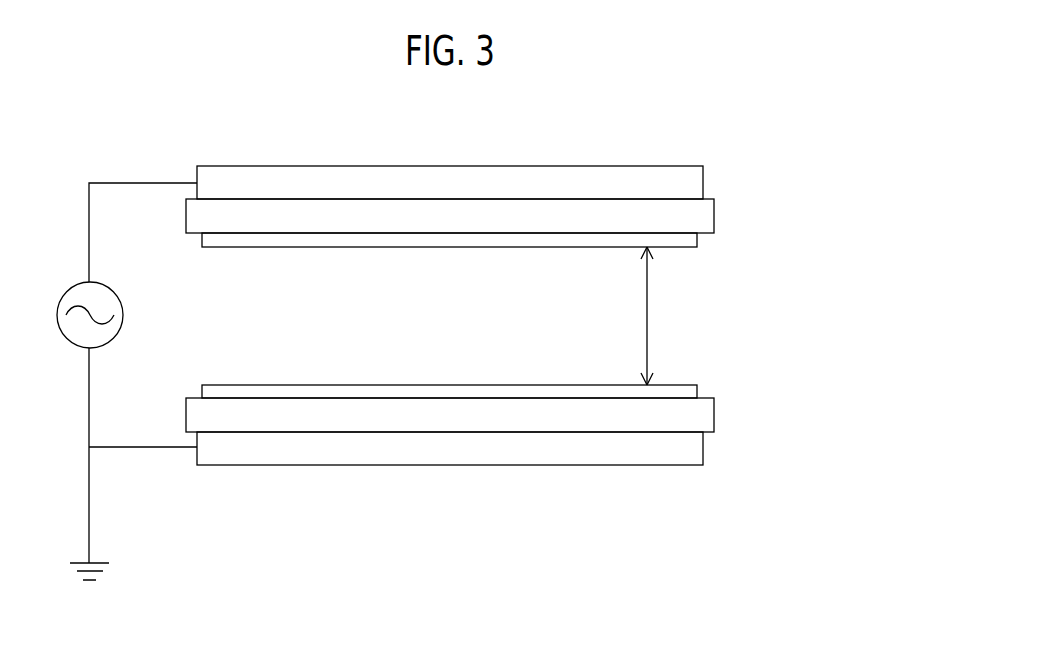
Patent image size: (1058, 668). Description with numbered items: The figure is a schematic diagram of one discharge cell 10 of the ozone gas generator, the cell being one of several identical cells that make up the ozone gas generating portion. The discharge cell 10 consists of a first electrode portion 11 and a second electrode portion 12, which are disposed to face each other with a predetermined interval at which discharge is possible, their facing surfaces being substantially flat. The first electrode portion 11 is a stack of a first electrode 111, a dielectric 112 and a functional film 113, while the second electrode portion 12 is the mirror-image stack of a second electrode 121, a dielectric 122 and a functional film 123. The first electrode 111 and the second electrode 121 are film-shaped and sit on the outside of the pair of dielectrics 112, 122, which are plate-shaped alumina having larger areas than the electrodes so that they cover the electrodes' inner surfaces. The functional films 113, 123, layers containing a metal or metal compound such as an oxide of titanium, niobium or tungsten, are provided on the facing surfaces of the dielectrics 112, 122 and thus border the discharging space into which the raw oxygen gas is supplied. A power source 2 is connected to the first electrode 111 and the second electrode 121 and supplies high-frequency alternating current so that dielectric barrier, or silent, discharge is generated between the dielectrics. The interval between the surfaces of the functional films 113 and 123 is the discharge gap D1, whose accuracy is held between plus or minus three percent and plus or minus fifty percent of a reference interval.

The power source 2 is at (112, 292).
The discharge cell 10 is at (690, 135).
The first electrode portion 11 is at (535, 211).
The first electrode 111 is at (703, 183).
The dielectric 112 is at (714, 216).
The functional film 113 is at (697, 242).
The second electrode portion 12 is at (535, 421).
The second electrode 121 is at (703, 449).
The dielectric 122 is at (714, 415).
The functional film 123 is at (697, 390).
The discharge gap D1 is at (662, 316).